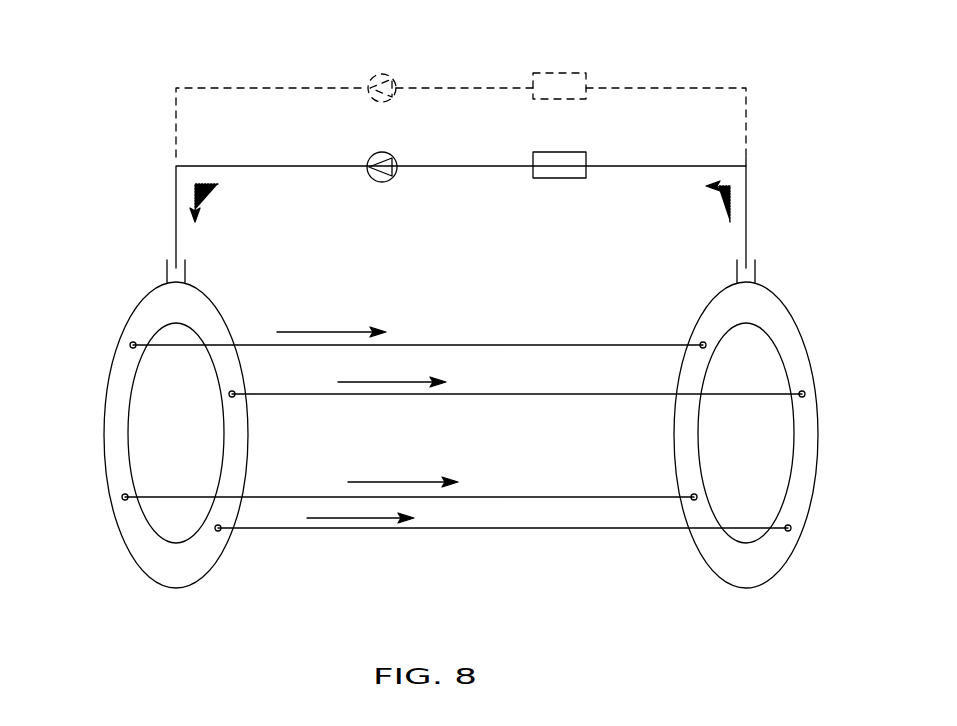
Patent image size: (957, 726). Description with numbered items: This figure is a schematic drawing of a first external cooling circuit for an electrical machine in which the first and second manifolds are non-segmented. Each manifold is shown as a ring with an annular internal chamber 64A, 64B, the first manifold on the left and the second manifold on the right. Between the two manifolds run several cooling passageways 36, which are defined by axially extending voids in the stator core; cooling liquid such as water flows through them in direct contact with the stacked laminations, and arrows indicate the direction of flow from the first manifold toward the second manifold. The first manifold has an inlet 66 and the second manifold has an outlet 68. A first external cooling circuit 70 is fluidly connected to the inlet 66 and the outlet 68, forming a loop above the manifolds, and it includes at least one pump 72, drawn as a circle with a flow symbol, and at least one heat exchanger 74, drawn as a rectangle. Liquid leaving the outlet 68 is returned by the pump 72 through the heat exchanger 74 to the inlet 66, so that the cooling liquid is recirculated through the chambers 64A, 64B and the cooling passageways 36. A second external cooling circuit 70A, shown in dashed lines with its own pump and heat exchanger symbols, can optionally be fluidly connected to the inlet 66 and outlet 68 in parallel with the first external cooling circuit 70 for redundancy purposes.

The cooling passageway 36 is at (497, 394).
The annular internal chamber 64A is at (112, 433).
The annular internal chamber 64B is at (810, 445).
The inlet 66 is at (167, 270).
The outlet 68 is at (752, 270).
The first external cooling circuit 70 is at (176, 200).
The second external cooling circuit 70A is at (176, 128).
The pump 72 is at (380, 182).
The heat exchanger 74 is at (558, 178).